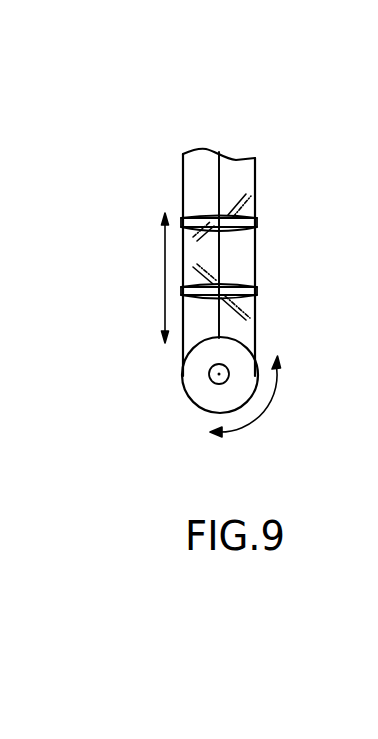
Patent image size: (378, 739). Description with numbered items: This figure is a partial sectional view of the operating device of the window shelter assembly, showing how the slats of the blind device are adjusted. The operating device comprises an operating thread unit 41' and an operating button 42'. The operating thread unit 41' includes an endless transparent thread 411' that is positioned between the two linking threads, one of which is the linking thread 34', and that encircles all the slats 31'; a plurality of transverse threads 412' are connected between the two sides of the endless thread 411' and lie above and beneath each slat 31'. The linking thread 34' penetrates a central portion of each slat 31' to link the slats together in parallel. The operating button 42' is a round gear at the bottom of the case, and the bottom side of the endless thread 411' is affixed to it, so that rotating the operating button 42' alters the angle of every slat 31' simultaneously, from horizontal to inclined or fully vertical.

The operating thread unit 41' is at (210, 272).
The endless transparent thread 411' is at (261, 262).
The transverse threads 412' is at (266, 283).
The operating button 42' is at (254, 399).
The slats 31' is at (261, 244).
The linking thread 34' is at (291, 210).